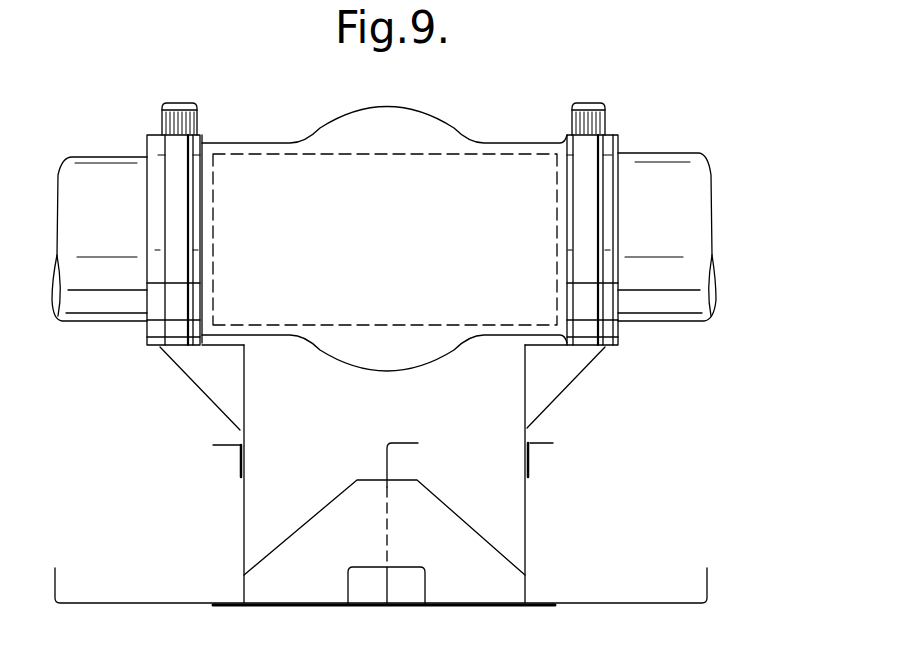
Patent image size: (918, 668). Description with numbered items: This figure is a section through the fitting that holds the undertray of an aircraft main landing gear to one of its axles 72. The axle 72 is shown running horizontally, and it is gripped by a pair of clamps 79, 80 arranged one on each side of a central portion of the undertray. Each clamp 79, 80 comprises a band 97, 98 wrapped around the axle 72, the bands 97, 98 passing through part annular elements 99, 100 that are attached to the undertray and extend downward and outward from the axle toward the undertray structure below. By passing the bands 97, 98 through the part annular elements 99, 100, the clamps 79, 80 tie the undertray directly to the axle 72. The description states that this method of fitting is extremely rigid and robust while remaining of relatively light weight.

The axle 72 is at (693, 205).
The clamp 79 is at (193, 103).
The clamp 80 is at (587, 102).
The band 97 is at (175, 180).
The band 98 is at (587, 175).
The part annular element 99 is at (200, 382).
The part annular element 100 is at (577, 378).